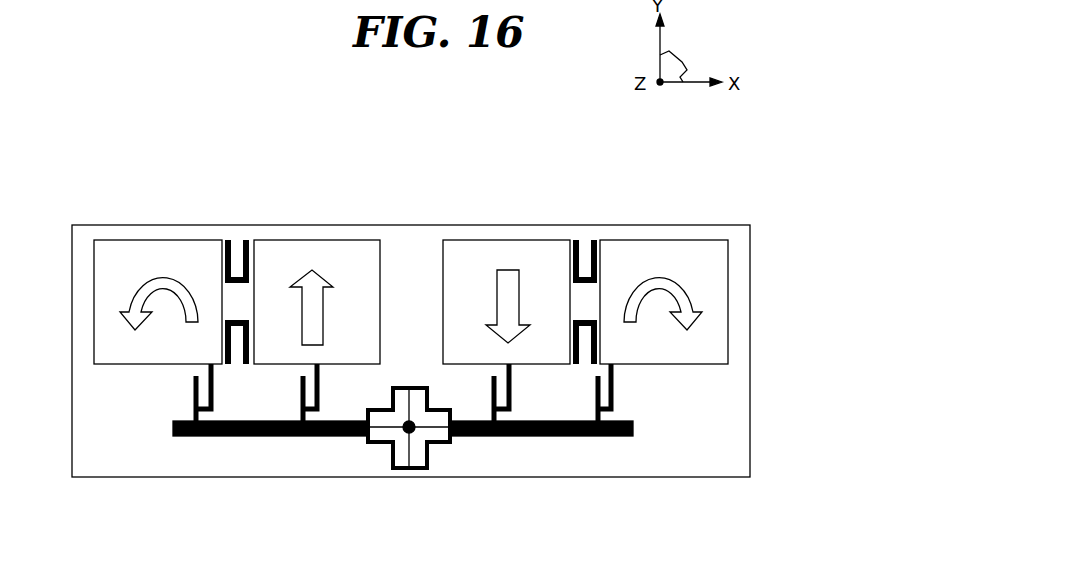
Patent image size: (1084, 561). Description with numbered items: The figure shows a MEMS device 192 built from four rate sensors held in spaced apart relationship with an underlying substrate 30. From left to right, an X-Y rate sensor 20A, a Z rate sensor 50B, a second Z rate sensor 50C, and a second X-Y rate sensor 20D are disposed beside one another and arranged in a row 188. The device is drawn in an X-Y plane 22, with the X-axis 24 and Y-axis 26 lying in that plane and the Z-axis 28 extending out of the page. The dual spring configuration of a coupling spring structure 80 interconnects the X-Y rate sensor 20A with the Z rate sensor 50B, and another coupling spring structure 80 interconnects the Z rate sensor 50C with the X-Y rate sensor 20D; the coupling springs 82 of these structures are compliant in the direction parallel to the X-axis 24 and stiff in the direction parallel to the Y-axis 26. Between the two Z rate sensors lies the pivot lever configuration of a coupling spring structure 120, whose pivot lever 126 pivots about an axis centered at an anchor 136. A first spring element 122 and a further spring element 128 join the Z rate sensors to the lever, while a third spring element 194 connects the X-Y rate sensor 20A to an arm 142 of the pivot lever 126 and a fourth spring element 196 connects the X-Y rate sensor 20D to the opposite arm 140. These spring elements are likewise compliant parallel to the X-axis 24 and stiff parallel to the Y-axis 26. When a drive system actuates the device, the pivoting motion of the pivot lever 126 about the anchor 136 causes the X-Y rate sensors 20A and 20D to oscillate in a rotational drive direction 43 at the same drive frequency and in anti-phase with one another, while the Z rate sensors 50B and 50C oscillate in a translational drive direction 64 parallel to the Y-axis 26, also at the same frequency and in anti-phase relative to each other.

The X-Y plane 22 is at (683, 62).
The X-axis 24 is at (697, 82).
The Y-axis 26 is at (659, 38).
The Z-axis 28 is at (660, 95).
The substrate 30 is at (97, 229).
The X-Y rate sensor 20A is at (138, 250).
The X-Y rate sensor 20D is at (670, 250).
The Z rate sensor 50B is at (283, 250).
The Z rate sensor 50C is at (480, 250).
The coupling spring structure 80 is at (237, 232).
The coupling spring 82 is at (245, 262).
The rotational drive direction 43 is at (148, 293).
The translational drive direction 64 is at (320, 317).
The third spring element 194 is at (194, 402).
The spring connector 128 is at (320, 397).
The first spring element 122 is at (492, 403).
The fourth spring element 196 is at (615, 404).
The pivot lever 126 is at (634, 437).
The arm 142 is at (355, 437).
The arm 140 is at (478, 437).
The anchor 136 is at (410, 440).
The row 188 is at (735, 310).
The coupling spring structure 120 is at (646, 424).
The MEMS device 192 is at (226, 533).